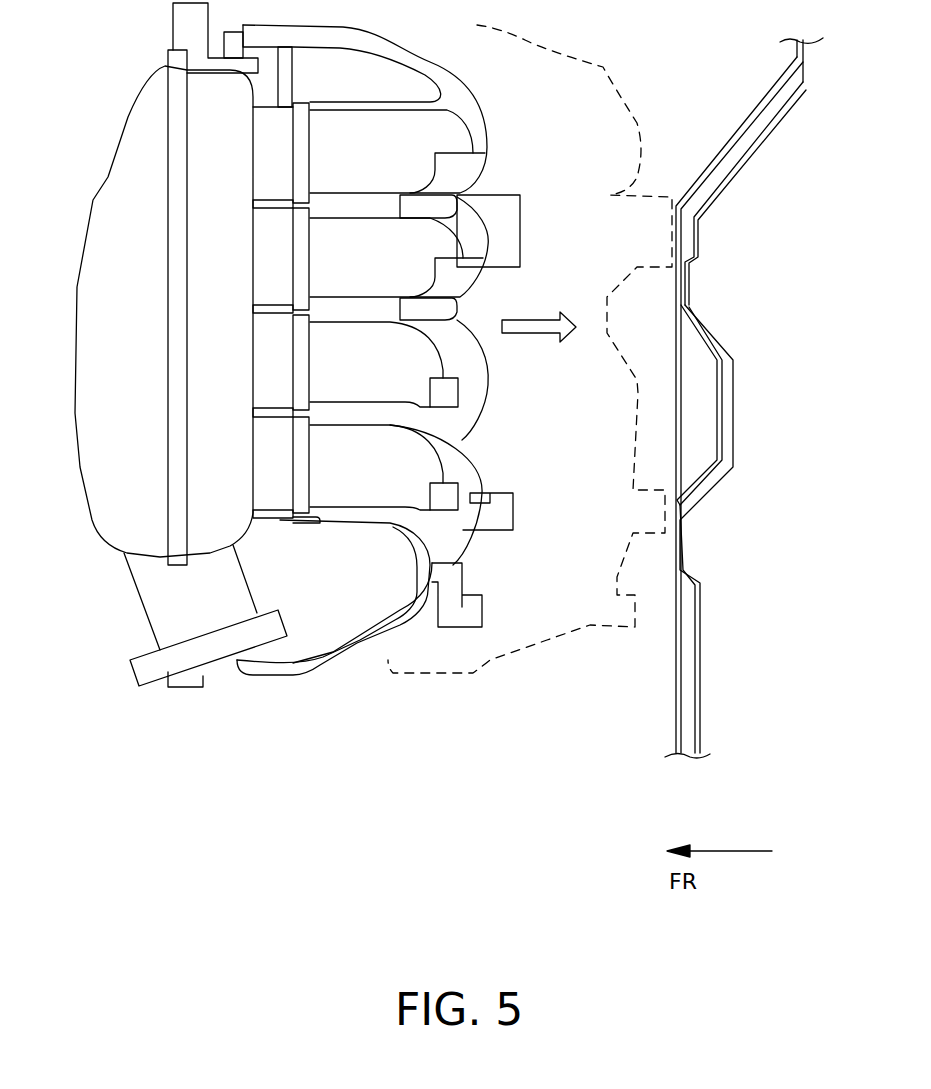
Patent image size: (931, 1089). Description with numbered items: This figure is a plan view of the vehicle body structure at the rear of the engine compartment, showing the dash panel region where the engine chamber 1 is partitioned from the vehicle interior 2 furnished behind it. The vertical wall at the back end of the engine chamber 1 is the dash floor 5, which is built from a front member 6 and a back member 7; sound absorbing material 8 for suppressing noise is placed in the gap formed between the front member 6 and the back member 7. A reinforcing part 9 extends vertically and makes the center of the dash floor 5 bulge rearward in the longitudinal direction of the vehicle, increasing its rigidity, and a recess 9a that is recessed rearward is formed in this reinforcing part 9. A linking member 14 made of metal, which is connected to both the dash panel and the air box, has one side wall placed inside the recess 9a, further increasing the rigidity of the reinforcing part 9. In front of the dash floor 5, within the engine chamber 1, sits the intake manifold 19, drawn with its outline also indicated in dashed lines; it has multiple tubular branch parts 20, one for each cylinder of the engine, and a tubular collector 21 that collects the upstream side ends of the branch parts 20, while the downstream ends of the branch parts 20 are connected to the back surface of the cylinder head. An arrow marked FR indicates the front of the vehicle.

The engine chamber 1 is at (650, 698).
The vehicle interior 2 is at (757, 698).
The dash floor 5 is at (745, 398).
The front member 6 is at (737, 130).
The back member 7 is at (782, 108).
The sound absorbing material 8 is at (777, 95).
The reinforcing part 9 is at (708, 337).
The recess 9a is at (713, 397).
The linking member 14 is at (672, 390).
The intake manifold 19 is at (128, 116).
The branch parts 20 is at (483, 125).
The collector 21 is at (78, 278).